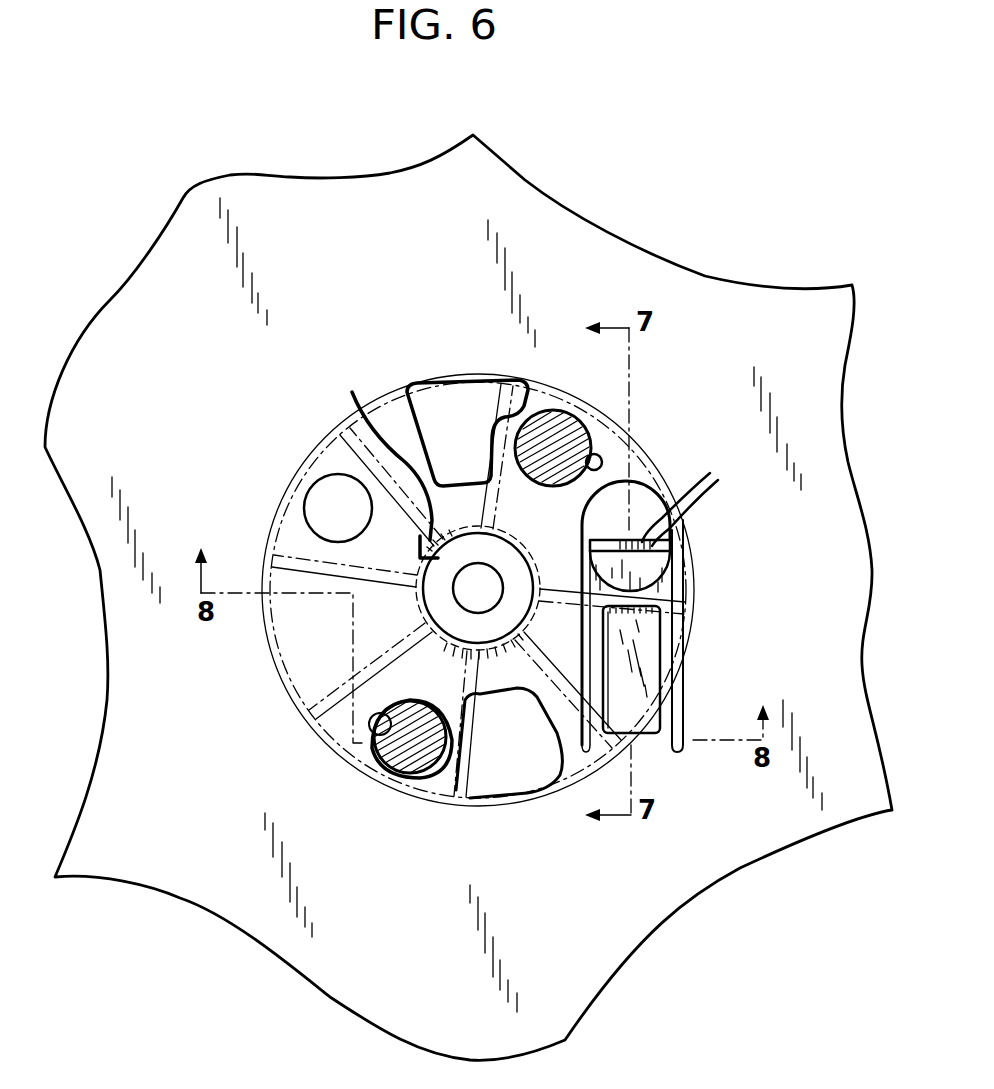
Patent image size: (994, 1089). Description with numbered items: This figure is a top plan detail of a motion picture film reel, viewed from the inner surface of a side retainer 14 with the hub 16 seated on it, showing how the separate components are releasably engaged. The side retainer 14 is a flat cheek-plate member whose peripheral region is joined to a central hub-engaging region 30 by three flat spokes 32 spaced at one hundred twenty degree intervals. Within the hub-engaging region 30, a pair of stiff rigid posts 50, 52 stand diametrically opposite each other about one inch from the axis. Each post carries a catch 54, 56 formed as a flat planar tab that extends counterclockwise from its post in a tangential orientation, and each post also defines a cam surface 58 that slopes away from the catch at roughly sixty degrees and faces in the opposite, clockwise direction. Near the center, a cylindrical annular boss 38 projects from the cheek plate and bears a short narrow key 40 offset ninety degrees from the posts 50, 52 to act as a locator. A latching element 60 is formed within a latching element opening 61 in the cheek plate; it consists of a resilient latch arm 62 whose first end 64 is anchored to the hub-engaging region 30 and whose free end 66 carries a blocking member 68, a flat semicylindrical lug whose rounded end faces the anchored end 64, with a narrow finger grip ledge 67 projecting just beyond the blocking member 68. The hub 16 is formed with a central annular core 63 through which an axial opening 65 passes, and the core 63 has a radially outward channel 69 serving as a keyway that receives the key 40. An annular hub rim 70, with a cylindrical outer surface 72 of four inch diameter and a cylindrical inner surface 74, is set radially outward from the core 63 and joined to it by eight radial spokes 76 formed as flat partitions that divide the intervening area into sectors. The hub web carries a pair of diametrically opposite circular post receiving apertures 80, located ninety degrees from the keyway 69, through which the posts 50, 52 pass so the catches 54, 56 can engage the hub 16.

The side retainer 14 is at (678, 907).
The hub 16 is at (308, 452).
The hub-engaging region 30 is at (310, 953).
The spokes 32 is at (698, 859).
The annular boss 38 is at (432, 597).
The key 40 is at (385, 456).
The post 50 is at (397, 777).
The post 52 is at (596, 452).
The catch 54 is at (432, 760).
The catch 56 is at (491, 412).
The cam surface 58 is at (550, 430).
The latching element 60 is at (680, 667).
The latching element opening 61 is at (655, 515).
The latch arm 62 is at (688, 722).
The annular core 63 is at (356, 660).
The first end 64 is at (640, 764).
The axial opening 65 is at (455, 628).
The free end 66 is at (668, 542).
The finger grip ledge 67 is at (686, 495).
The blocking member 68 is at (647, 573).
The channel 69 is at (305, 505).
The hub rim 70 is at (268, 642).
The cylindrical outer surface 72 is at (330, 730).
The cylindrical inner surface 74 is at (310, 684).
The radial spokes 76 is at (338, 430).
The post receiving apertures 80 is at (602, 462).